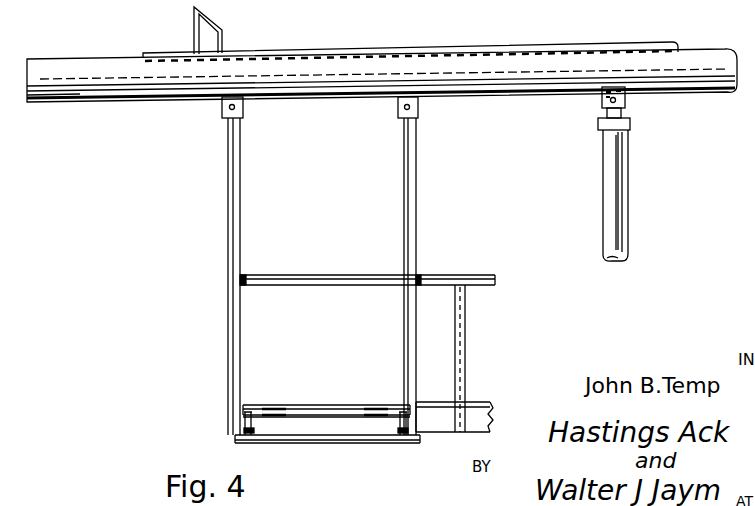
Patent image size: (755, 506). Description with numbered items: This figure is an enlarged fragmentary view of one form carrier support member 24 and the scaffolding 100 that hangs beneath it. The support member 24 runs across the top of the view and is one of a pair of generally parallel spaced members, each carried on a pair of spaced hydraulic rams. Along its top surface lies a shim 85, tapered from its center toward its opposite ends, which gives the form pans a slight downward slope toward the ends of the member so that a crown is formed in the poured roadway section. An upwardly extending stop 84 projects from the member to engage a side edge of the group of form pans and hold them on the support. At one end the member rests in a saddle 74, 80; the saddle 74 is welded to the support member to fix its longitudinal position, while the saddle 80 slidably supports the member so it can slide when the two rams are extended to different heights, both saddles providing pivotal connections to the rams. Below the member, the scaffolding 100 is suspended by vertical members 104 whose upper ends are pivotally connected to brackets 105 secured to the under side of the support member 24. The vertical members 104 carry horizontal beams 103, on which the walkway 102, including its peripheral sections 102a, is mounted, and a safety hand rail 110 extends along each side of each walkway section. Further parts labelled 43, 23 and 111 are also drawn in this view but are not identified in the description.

The support member 24 is at (78, 88).
The shim 85 is at (601, 22).
The stop 84 is at (204, 33).
The top saddle member 74 is at (643, 108).
The saddle 80 is at (625, 98).
The rod 43 is at (612, 142).
The rod member 23 is at (636, 222).
The scaffolding 100 is at (232, 366).
The bracket 105 is at (243, 109).
The vertical member 104 is at (232, 229).
The safety hand rail 110 is at (332, 276).
The column 111 is at (462, 333).
The walkway 102 is at (304, 378).
The peripheral section 102a is at (352, 383).
The horizontal beam 103 is at (262, 426).